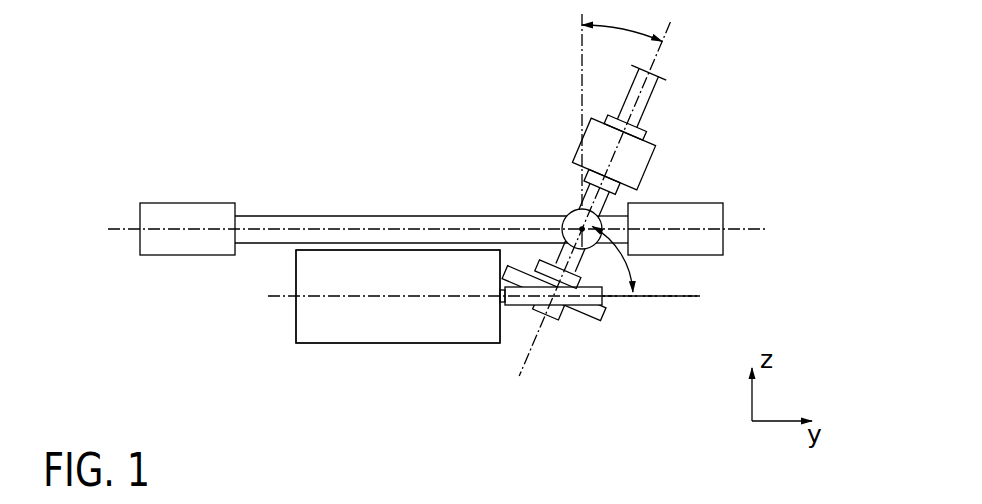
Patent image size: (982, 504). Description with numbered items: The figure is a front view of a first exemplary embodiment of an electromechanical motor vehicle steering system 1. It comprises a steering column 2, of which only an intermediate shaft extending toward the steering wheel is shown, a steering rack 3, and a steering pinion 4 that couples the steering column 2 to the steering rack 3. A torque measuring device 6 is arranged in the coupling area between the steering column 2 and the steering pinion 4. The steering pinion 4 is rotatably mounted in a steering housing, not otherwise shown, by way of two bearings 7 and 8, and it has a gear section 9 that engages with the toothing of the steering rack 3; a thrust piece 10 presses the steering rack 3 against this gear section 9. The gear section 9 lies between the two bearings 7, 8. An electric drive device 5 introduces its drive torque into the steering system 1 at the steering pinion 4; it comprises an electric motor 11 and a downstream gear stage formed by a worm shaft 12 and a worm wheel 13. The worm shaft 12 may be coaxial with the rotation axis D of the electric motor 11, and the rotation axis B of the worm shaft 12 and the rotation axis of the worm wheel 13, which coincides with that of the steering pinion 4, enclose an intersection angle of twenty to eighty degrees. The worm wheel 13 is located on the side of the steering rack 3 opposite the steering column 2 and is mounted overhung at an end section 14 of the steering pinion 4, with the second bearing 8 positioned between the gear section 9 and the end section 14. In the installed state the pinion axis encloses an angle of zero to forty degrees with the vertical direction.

The steering system 1 is at (148, 153).
The steering column 2 is at (648, 98).
The steering rack 3 is at (272, 235).
The steering pinion 4 is at (560, 252).
The electric drive device 5 is at (317, 328).
The torque measuring device 6 is at (635, 155).
The bearing 7 is at (590, 179).
The second bearing 8 is at (567, 278).
The gear section 9 is at (598, 207).
The thrust piece 10 is at (573, 219).
The electric motor 11 is at (372, 322).
The worm shaft 12 is at (525, 302).
The worm wheel 13 is at (601, 318).
The end section 14 is at (558, 318).
The rotation axis of the electric motor D is at (431, 296).
The rotation axis of the worm shaft B is at (693, 296).